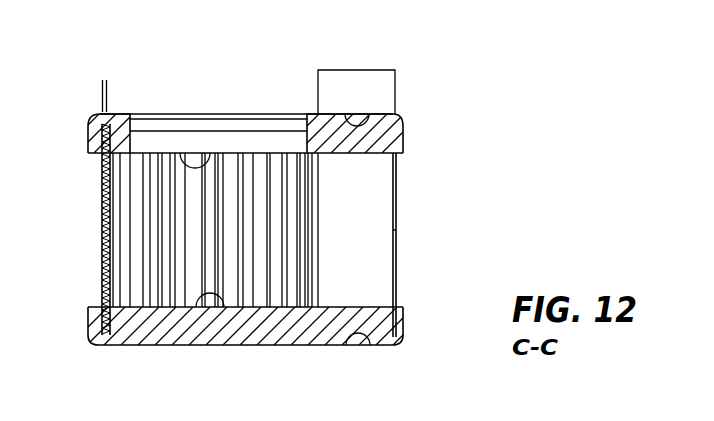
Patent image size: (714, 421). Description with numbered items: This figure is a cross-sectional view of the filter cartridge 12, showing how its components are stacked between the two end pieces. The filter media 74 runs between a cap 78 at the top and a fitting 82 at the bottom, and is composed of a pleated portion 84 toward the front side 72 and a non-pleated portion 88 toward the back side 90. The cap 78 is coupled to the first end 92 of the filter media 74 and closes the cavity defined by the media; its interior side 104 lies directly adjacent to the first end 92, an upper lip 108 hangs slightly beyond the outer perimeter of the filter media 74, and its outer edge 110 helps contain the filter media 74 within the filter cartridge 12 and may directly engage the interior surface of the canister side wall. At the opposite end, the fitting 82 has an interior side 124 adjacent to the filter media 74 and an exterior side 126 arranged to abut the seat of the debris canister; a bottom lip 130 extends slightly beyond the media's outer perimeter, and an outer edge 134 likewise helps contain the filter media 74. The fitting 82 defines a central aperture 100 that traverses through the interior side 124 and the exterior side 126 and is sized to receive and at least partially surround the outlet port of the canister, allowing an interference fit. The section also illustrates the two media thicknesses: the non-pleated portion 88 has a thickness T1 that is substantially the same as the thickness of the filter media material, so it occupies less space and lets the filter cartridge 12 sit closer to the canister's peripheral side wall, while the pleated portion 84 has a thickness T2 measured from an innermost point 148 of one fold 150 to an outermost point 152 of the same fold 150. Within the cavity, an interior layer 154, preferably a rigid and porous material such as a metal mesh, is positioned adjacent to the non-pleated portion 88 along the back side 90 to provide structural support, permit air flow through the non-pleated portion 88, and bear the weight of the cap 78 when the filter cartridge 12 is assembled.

The filter cartridge 12 is at (489, 94).
The front side 72 is at (398, 258).
The filter media 74 is at (115, 198).
The cap 78 is at (294, 335).
The fitting 82 is at (385, 123).
The pleated portion 84 is at (397, 226).
The non-pleated portion 88 is at (105, 225).
The back side 90 is at (100, 172).
The first end 92 is at (398, 307).
The central aperture 100 is at (147, 140).
The interior side 104 is at (216, 296).
The upper lip 108 is at (92, 307).
The outer edge 110 is at (404, 320).
The interior side 124 is at (208, 157).
The exterior side 126 is at (168, 113).
The bottom lip 130 is at (88, 153).
The outer edge 134 is at (405, 128).
The innermost point 148 is at (313, 173).
The fold 150 is at (371, 239).
The outermost point 152 is at (398, 175).
The interior layer 154 is at (110, 258).
The thickness T1 is at (103, 80).
The thickness T2 is at (340, 72).